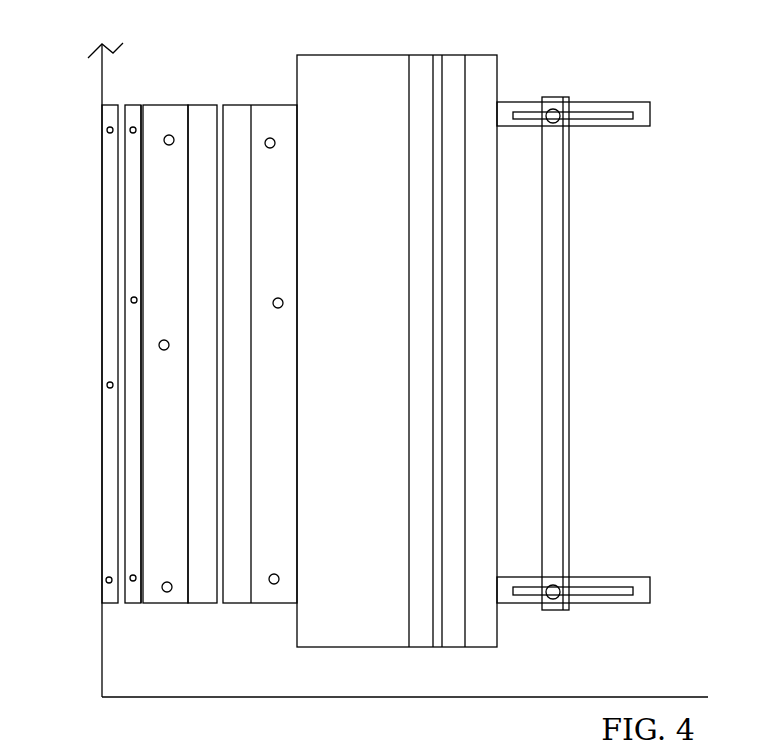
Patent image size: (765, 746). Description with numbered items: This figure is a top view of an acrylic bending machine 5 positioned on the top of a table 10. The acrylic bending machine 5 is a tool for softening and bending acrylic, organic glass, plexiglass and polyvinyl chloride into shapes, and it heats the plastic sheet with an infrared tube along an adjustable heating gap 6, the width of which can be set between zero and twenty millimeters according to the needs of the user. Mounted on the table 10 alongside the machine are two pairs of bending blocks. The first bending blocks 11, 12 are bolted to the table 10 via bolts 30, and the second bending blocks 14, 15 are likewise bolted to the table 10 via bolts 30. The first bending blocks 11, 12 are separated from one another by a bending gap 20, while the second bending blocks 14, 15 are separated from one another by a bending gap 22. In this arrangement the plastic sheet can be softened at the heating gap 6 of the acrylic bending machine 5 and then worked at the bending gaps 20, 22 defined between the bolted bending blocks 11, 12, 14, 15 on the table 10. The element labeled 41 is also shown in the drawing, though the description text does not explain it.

The acrylic bending machine 5 is at (530, 68).
The adjustable heating gap 6 is at (398, 394).
The table 10 is at (585, 673).
The first bending block 11 is at (258, 105).
The first bending block 12 is at (177, 108).
The second bending block 14 is at (135, 608).
The second bending block 15 is at (105, 608).
The bending gap 20 is at (217, 105).
The bending gap 22 is at (123, 608).
The bolts 30 is at (268, 302).
The main body 41 is at (397, 400).